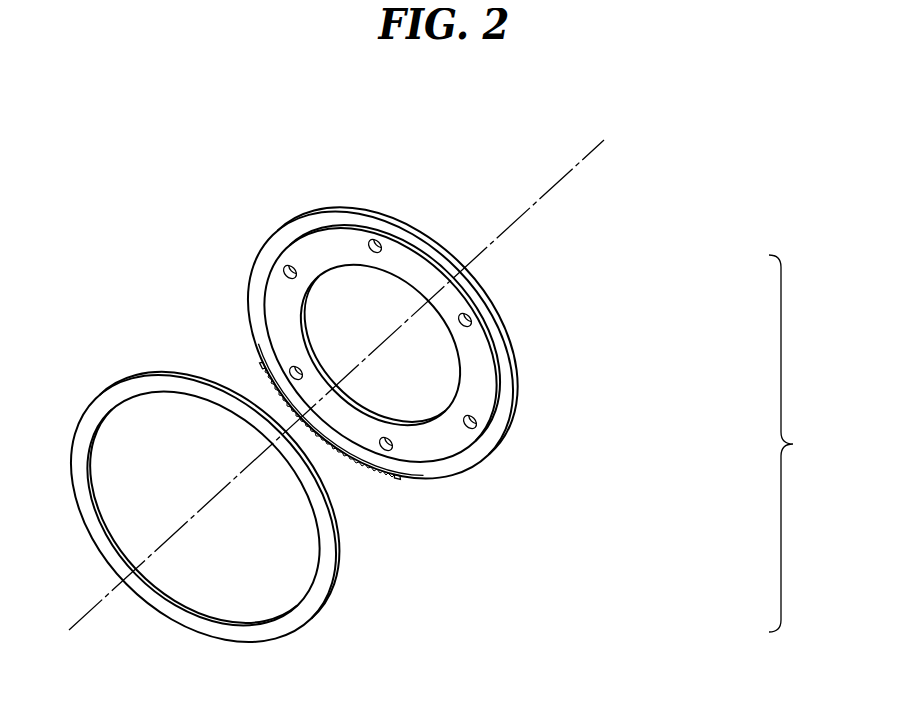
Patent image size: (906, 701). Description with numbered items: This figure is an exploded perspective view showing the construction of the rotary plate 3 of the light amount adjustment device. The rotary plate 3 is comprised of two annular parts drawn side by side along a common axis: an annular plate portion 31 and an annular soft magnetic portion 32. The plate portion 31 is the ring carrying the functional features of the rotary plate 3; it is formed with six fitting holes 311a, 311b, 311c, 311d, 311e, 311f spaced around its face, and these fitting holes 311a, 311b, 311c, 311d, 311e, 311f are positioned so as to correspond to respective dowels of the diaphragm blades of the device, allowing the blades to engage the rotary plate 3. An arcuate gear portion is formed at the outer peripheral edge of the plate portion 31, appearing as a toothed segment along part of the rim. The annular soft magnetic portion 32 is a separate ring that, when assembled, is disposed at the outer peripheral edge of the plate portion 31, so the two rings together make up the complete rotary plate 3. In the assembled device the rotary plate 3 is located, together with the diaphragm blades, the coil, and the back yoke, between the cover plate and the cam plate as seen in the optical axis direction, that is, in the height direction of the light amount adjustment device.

The rotary plate 3 is at (793, 443).
The annular plate portion 31 is at (448, 352).
The annular soft magnetic portion 32 is at (306, 606).
The fitting hole 311a is at (394, 474).
The fitting hole 311b is at (478, 427).
The fitting hole 311c is at (470, 313).
The fitting hole 311d is at (377, 236).
The fitting hole 311e is at (287, 262).
The fitting hole 311f is at (289, 363).